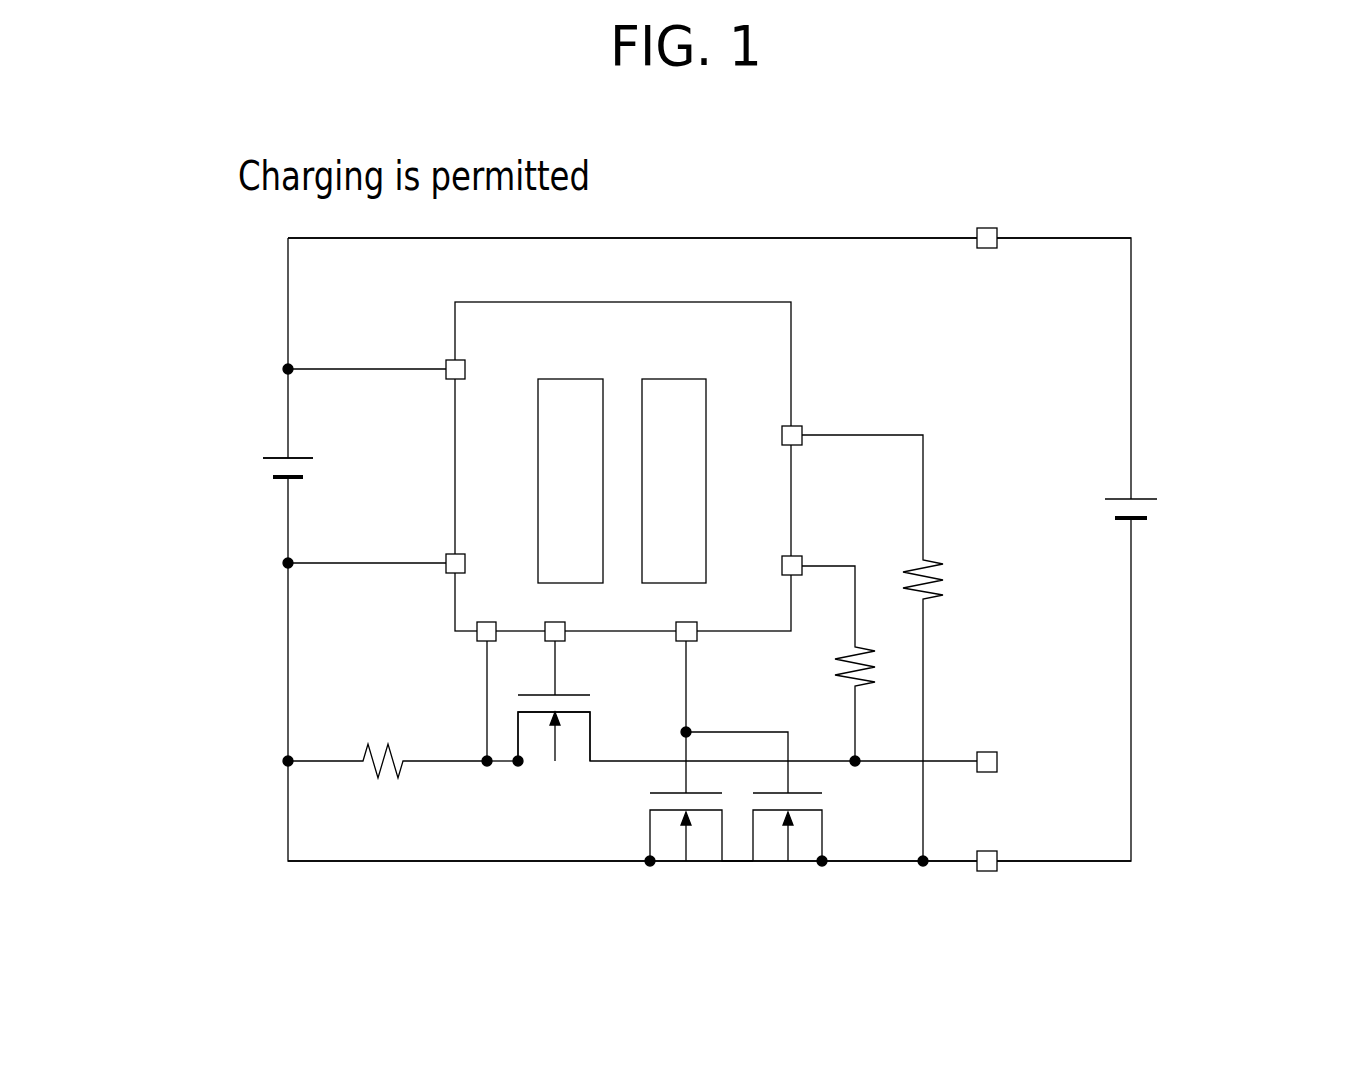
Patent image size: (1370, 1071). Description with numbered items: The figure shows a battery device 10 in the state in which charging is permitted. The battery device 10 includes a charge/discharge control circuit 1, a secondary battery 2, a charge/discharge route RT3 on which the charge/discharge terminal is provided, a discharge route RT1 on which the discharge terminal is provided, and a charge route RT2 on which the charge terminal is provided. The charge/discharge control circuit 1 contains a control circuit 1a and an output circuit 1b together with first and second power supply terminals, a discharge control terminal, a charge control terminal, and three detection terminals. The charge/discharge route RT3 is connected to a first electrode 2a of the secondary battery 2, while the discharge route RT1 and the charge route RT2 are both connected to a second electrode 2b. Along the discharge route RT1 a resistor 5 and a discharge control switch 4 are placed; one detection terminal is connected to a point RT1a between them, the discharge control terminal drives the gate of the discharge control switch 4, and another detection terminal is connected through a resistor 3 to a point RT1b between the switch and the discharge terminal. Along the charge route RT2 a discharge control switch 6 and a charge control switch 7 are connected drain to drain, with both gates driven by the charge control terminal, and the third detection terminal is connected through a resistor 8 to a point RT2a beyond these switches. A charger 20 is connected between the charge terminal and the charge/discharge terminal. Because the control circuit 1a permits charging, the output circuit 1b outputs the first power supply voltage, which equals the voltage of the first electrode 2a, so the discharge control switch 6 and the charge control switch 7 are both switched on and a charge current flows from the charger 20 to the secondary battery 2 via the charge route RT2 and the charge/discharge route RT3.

The charge/discharge control circuit 1 is at (791, 347).
The control circuit 1a is at (570, 379).
The output circuit 1b is at (674, 379).
The secondary battery 2 is at (263, 468).
The first electrode 2a is at (302, 457).
The second electrode 2b is at (300, 480).
The resistor 3 is at (838, 668).
The discharge control switch 4 is at (592, 740).
The resistor 5 is at (380, 742).
The discharge control switch 6 is at (650, 826).
The charge control switch 7 is at (824, 826).
The resistor 8 is at (946, 578).
The battery device 10 is at (699, 237).
The charger 20 is at (1158, 508).
The discharge route RT1 is at (944, 761).
The point between resistor 5 and discharge control switch 4 RT1a is at (489, 765).
The point between discharge control switch 4 and discharge terminal DIS− RT1b is at (857, 765).
The charge route RT2 is at (944, 861).
The point along charge route RT2a is at (921, 865).
The charge/discharge route RT3 is at (826, 238).